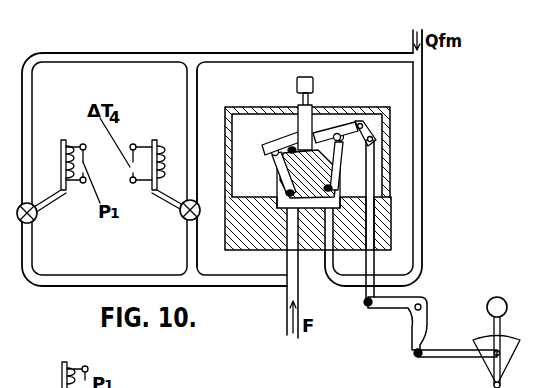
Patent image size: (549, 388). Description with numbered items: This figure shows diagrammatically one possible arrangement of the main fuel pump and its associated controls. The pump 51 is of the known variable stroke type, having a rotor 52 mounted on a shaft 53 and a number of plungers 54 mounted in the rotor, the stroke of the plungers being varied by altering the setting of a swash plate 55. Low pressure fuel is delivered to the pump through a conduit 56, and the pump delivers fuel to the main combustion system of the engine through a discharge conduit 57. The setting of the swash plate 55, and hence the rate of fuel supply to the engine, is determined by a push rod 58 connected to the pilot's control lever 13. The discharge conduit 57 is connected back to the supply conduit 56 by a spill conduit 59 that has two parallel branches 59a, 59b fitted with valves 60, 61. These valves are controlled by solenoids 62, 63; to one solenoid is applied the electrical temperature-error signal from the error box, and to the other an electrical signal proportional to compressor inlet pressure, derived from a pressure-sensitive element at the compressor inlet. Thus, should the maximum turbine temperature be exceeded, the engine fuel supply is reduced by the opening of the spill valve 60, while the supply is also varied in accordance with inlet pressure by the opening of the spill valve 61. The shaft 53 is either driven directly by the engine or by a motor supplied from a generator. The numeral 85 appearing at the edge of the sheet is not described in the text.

The pilot's control lever 13 is at (498, 335).
The pump 51 is at (233, 108).
The rotor 52 is at (317, 173).
The shaft 53 is at (313, 85).
The plungers 54 is at (282, 183).
The swash plate 55 is at (287, 142).
The conduit 56 is at (287, 300).
The conduit 57 is at (422, 112).
The push rod 58 is at (374, 223).
The spill conduit 59 is at (287, 53).
The branch 59a is at (188, 98).
The branch 59b is at (28, 98).
The spill valve 60 is at (179, 214).
The spill valve 61 is at (36, 219).
The solenoid 62 is at (158, 147).
The solenoid 63 is at (58, 147).
The relay coil 85 is at (62, 372).